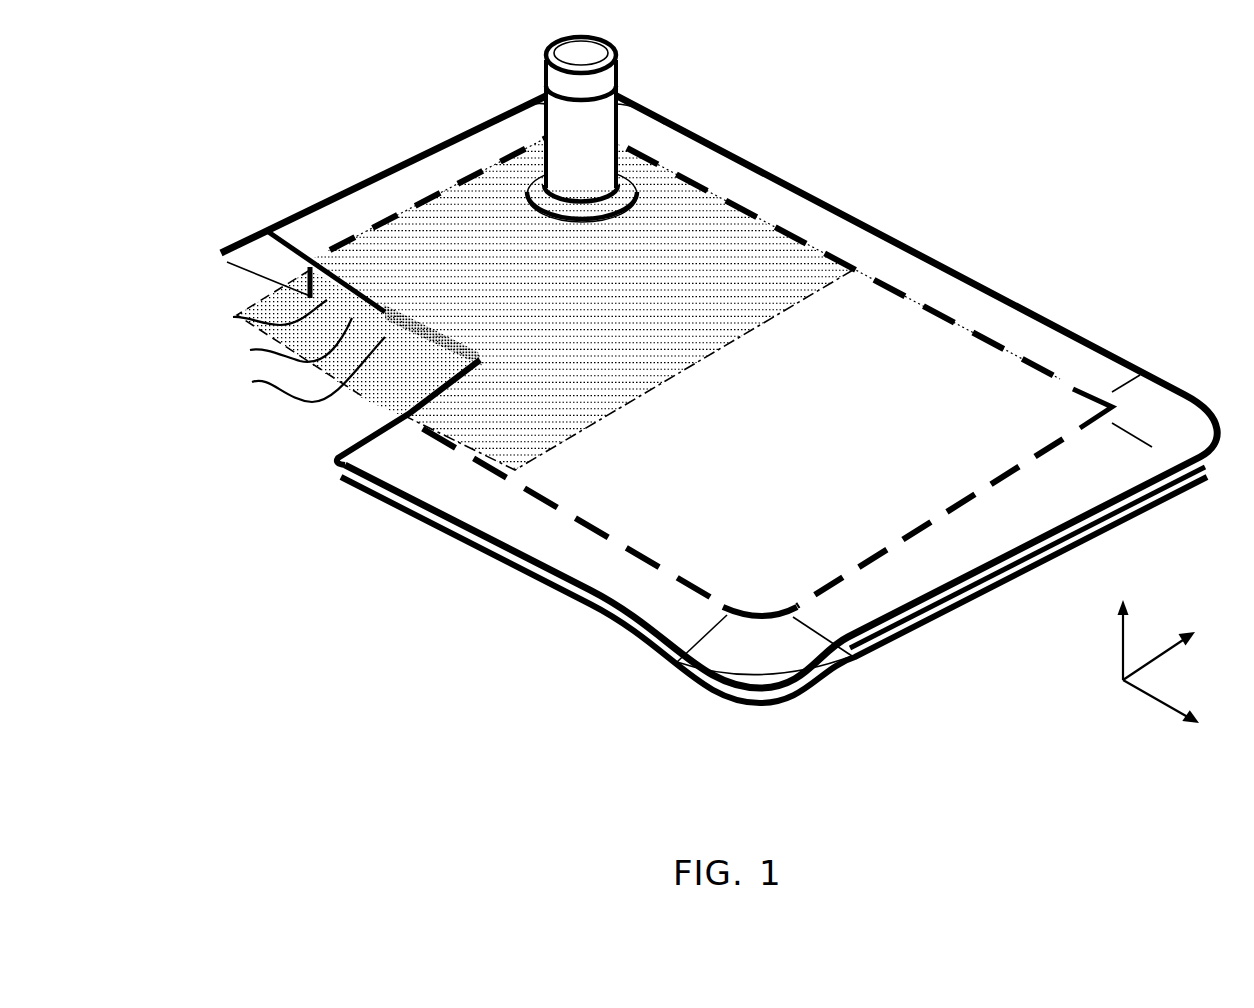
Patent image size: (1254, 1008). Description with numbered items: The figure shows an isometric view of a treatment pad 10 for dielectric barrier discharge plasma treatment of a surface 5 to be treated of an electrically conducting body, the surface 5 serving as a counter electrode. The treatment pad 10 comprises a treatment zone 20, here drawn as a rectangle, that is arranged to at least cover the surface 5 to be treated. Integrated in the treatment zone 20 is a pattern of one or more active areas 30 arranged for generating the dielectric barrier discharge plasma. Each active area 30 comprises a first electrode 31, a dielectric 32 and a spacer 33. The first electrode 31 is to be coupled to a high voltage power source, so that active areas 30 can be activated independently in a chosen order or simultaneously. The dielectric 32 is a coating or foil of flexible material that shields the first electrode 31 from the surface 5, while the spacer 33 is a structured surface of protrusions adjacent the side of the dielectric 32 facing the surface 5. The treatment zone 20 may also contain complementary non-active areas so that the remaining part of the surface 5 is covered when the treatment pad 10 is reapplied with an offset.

The treatment pad 10 is at (178, 102).
The treatment zone 20 is at (598, 548).
The active area 30 is at (708, 258).
The surface to be treated 5 is at (364, 398).
The first electrode 31 is at (233, 317).
The dielectric 32 is at (250, 350).
The spacer 33 is at (252, 382).